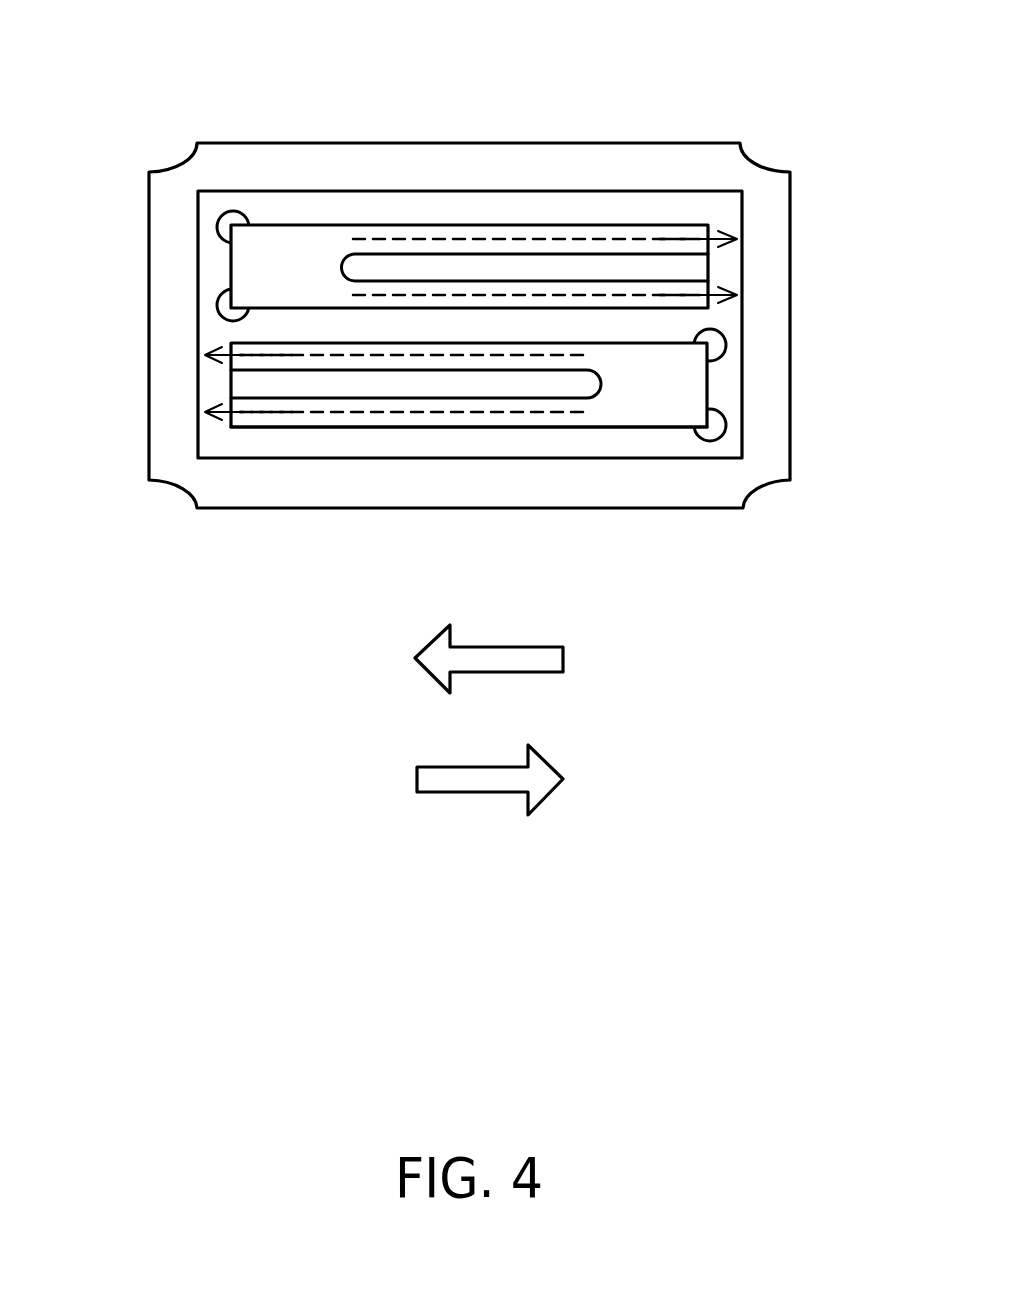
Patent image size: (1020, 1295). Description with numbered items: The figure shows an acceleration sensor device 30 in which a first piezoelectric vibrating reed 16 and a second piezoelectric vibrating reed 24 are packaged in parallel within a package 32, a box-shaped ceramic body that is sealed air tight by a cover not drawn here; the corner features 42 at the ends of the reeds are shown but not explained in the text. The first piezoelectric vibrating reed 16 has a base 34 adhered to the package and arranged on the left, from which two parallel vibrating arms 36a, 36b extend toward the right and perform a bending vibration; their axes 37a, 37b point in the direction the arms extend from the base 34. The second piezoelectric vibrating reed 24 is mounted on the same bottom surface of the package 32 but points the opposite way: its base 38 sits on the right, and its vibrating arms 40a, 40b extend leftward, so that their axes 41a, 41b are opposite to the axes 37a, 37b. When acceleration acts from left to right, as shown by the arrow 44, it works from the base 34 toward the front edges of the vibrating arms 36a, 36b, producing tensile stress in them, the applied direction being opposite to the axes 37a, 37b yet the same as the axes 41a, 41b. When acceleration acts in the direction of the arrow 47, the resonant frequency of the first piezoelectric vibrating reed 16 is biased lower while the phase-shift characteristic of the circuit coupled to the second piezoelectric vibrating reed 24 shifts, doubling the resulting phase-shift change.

The acceleration sensor device 30 is at (163, 133).
The package 32 is at (605, 143).
The first piezoelectric vibrating reed 16 is at (344, 222).
The holes 42 is at (219, 224).
The base 34 is at (279, 254).
The vibrating arm 36a is at (503, 231).
The vibrating arm 36b is at (427, 287).
The axis 37a is at (677, 241).
The axis 37b is at (643, 283).
The base 38 is at (647, 415).
The vibrating arm 40a is at (403, 417).
The vibrating arm 40b is at (362, 362).
The axis 41a is at (278, 413).
The axis 41b is at (267, 356).
The second piezoelectric vibrating reed 24 is at (518, 428).
The arrow 44 is at (503, 672).
The arrow 47 is at (480, 792).